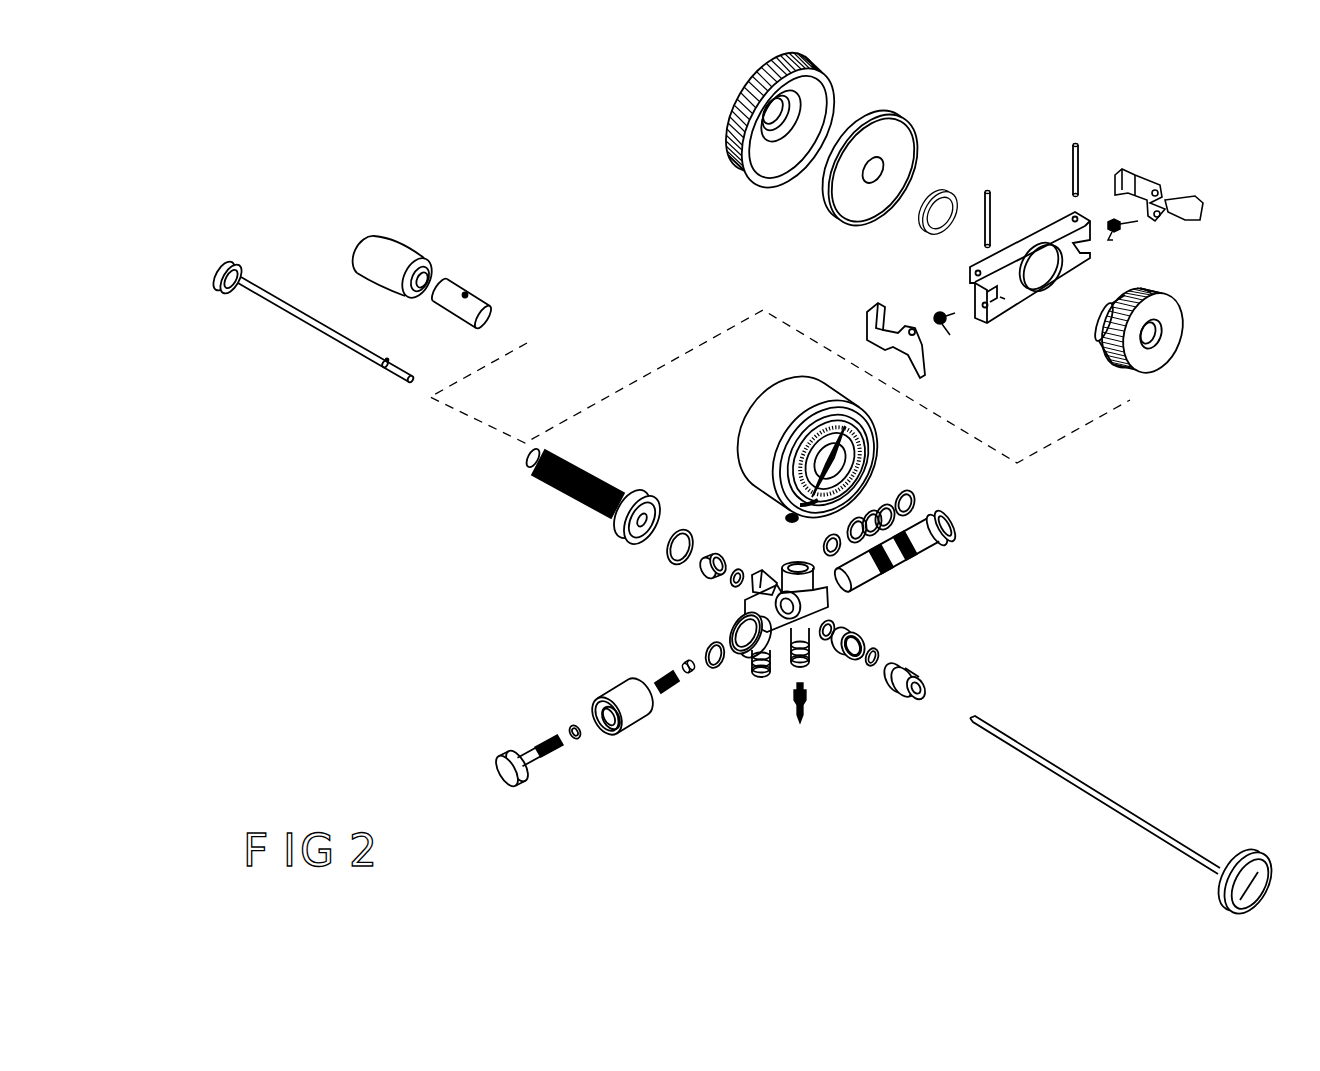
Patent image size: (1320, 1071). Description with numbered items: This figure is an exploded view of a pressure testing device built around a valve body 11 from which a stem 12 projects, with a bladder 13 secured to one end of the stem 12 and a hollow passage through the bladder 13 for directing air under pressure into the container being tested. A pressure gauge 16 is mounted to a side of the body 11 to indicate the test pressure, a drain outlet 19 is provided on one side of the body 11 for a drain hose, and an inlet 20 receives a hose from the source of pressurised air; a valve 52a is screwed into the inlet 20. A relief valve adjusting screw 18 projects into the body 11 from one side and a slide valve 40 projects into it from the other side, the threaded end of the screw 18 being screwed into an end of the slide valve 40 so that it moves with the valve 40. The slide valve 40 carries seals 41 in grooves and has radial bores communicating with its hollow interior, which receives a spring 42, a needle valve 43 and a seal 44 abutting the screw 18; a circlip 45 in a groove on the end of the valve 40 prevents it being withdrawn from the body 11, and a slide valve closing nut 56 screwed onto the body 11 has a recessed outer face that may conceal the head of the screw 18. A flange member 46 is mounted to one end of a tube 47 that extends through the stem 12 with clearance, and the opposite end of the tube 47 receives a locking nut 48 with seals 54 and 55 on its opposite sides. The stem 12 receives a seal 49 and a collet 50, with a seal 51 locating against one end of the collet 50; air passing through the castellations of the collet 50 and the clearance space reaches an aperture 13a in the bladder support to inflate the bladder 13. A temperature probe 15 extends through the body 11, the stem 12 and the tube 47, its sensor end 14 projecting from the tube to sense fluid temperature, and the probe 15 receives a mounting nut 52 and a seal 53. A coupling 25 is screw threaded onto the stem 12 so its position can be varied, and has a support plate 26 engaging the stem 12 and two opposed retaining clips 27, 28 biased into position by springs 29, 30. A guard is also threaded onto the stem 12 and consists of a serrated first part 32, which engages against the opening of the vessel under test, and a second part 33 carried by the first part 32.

The valve body 11 is at (835, 603).
The stem 12 is at (560, 498).
The bladder 13 is at (378, 233).
The aperture 13a is at (463, 283).
The sensor end 14 is at (970, 726).
The temperature probe 15 is at (1127, 800).
The pressure gauge 16 is at (738, 440).
The relief valve adjusting screw 18 is at (510, 750).
The drain outlet 19 is at (760, 684).
The inlet 20 is at (797, 670).
The coupling 25 is at (1207, 210).
The support plate 26 is at (1095, 271).
The retaining clip 27 is at (865, 310).
The retaining clip 28 is at (1163, 173).
The spring 29 is at (933, 308).
The spring 30 is at (1125, 234).
The first part 32 is at (787, 58).
The second part 33 is at (897, 112).
The slide valve 40 is at (955, 540).
The seals 41 is at (920, 500).
The spring 42 is at (658, 673).
The needle valve 43 is at (685, 662).
The seal 44 is at (585, 740).
The circlip 45 is at (710, 645).
The flange member 46 is at (235, 258).
The tube 47 is at (307, 335).
The locking nut 48 is at (868, 641).
The seal 49 is at (668, 550).
The collet 50 is at (702, 571).
The seal 51 is at (740, 568).
The mounting nut 52 is at (898, 694).
The valve 52a is at (800, 726).
The seal 53 is at (925, 688).
The seal 54 is at (838, 622).
The seal 55 is at (885, 655).
The slide valve closing nut 56 is at (595, 695).